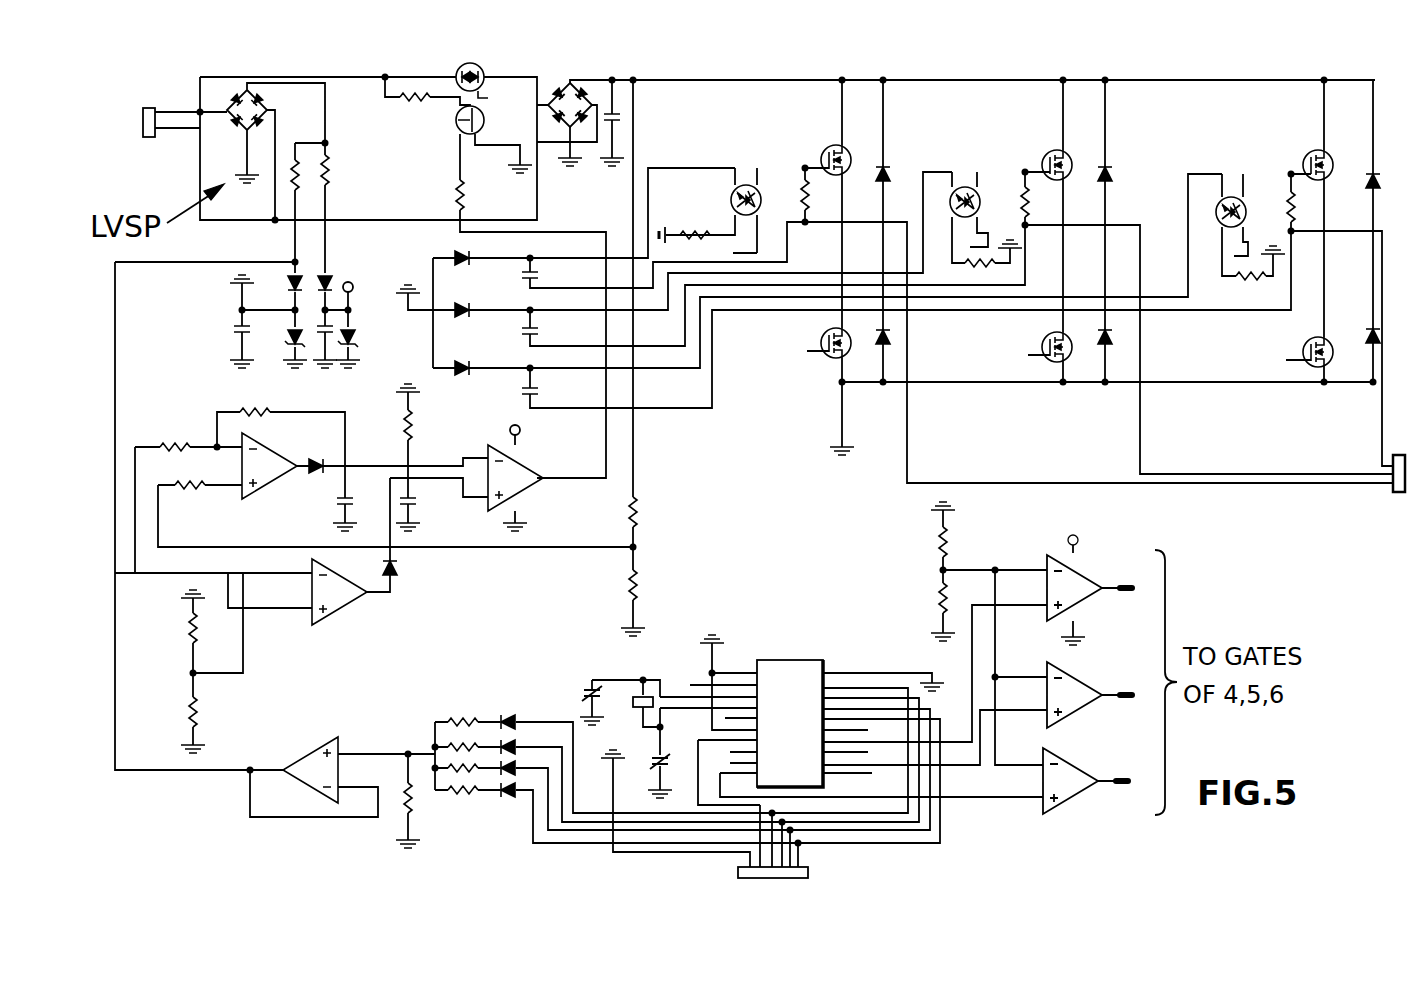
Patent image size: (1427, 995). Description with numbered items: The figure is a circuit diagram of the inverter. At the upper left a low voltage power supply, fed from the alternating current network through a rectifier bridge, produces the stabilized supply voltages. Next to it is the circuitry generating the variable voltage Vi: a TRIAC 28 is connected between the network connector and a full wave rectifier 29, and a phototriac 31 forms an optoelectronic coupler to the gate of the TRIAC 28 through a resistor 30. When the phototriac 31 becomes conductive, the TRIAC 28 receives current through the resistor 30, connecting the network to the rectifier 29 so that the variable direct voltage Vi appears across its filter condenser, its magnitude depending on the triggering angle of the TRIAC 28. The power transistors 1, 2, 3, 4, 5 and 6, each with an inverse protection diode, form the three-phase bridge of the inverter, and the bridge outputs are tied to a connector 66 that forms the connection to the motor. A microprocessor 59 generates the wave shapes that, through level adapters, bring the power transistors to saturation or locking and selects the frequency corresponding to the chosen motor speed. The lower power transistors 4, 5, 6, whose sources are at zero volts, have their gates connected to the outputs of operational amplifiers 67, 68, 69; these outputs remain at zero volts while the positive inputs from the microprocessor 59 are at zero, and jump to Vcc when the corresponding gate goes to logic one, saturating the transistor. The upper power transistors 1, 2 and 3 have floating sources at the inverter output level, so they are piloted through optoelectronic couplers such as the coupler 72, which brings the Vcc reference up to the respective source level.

The power transistor 1 is at (828, 150).
The power transistor 2 is at (1047, 155).
The power transistor 3 is at (1307, 156).
The power transistor 4 is at (820, 355).
The power transistor 5 is at (1040, 355).
The power transistor 6 is at (1302, 367).
The TRIAC 28 is at (458, 68).
The full wave rectifier 29 is at (558, 92).
The resistor 30 is at (413, 103).
The phototriac 31 is at (457, 130).
The microprocessor 59 is at (790, 665).
The connector 66 is at (1398, 492).
The operational amplifier 67 is at (1078, 580).
The operational amplifier 68 is at (1080, 692).
The operational amplifier 69 is at (1075, 782).
The optoelectronic coupler 72 is at (746, 185).